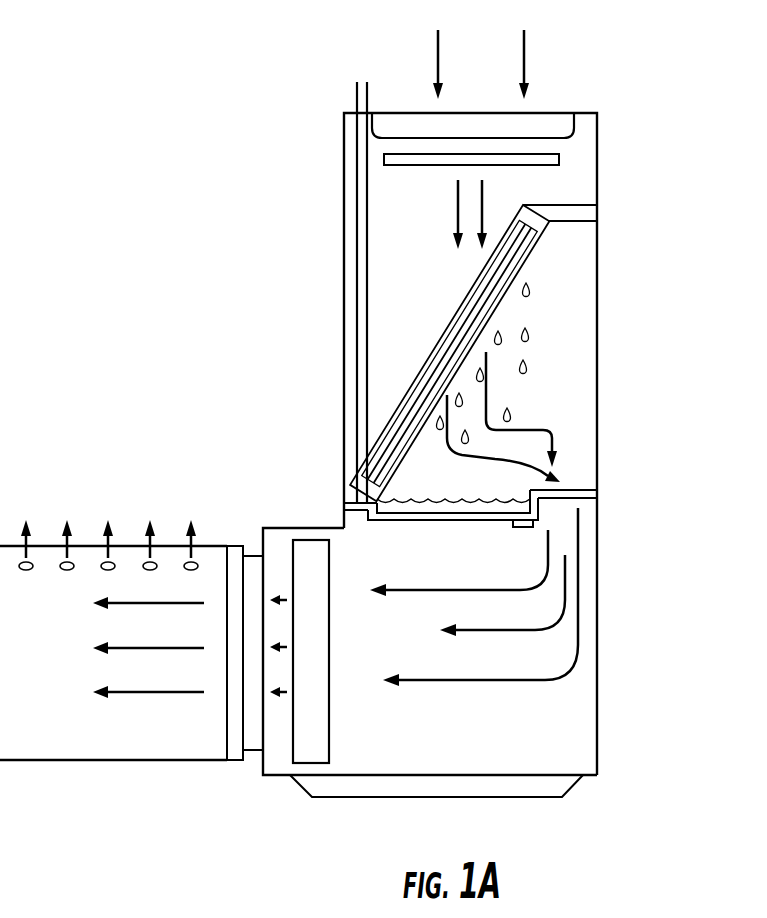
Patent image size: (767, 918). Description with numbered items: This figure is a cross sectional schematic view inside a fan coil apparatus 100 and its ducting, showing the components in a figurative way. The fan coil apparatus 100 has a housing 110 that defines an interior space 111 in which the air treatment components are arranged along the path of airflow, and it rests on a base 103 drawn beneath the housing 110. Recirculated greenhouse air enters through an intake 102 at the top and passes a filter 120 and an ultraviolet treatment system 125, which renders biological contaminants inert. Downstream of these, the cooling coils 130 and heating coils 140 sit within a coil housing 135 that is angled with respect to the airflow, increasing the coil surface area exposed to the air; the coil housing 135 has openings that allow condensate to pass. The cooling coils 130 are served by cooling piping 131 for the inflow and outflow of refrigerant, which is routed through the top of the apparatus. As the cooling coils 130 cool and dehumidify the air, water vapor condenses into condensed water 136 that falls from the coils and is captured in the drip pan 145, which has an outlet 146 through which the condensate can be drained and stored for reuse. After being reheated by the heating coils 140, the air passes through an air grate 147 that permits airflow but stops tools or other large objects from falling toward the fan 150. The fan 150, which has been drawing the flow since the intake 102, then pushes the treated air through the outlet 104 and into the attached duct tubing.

The fan coil apparatus 100 is at (710, 126).
The intake 102 is at (551, 113).
The base 103 is at (532, 797).
The outlet 104 is at (242, 567).
The housing 110 is at (598, 718).
The space 111 is at (422, 223).
The filter 120 is at (574, 131).
The ultraviolet treatment system 125 is at (537, 165).
The cooling coil 130 is at (398, 422).
The cooling piping 131 is at (356, 97).
The coil housing 135 is at (452, 318).
The condensed water 136 is at (527, 343).
The heating coil 140 is at (522, 258).
The drip pan 145 is at (540, 512).
The outlet 146 is at (525, 530).
The air grate 147 is at (578, 488).
The fan 150 is at (331, 585).